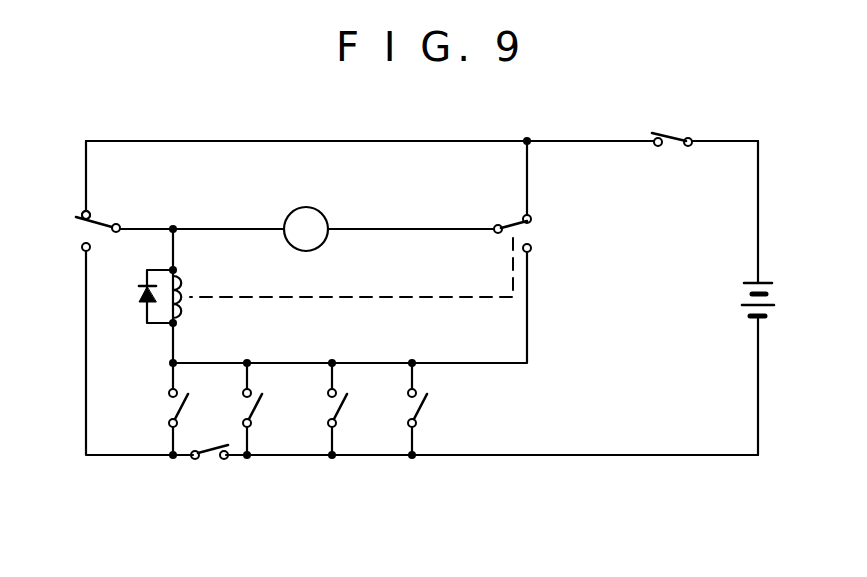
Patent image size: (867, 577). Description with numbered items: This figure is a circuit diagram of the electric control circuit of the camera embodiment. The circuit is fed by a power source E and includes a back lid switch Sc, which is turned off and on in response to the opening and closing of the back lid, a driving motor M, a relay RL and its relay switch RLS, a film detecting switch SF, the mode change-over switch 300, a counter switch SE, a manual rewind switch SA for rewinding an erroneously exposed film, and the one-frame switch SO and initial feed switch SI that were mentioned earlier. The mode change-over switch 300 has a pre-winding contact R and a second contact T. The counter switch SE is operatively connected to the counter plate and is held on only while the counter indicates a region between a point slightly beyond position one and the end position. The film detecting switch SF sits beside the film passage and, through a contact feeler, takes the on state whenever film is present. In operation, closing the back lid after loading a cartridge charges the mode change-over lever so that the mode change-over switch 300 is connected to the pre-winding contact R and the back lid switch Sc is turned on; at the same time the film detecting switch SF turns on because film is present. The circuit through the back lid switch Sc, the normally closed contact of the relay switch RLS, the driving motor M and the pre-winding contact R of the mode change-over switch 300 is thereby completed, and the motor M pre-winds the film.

The mode change-over switch 300 is at (111, 213).
The terminal T is at (74, 218).
The pre-winding mode contact R is at (73, 249).
The driving motor M is at (306, 229).
The relay switch RLS is at (403, 246).
The back lid switch Sc is at (672, 126).
The power source E is at (744, 299).
The relay RL is at (140, 296).
The counter switch SE is at (168, 441).
The film detecting switch SF is at (209, 469).
The manual rewind switch SA is at (252, 441).
The one-frame switch SO is at (334, 441).
The initial feed switch SI is at (412, 441).